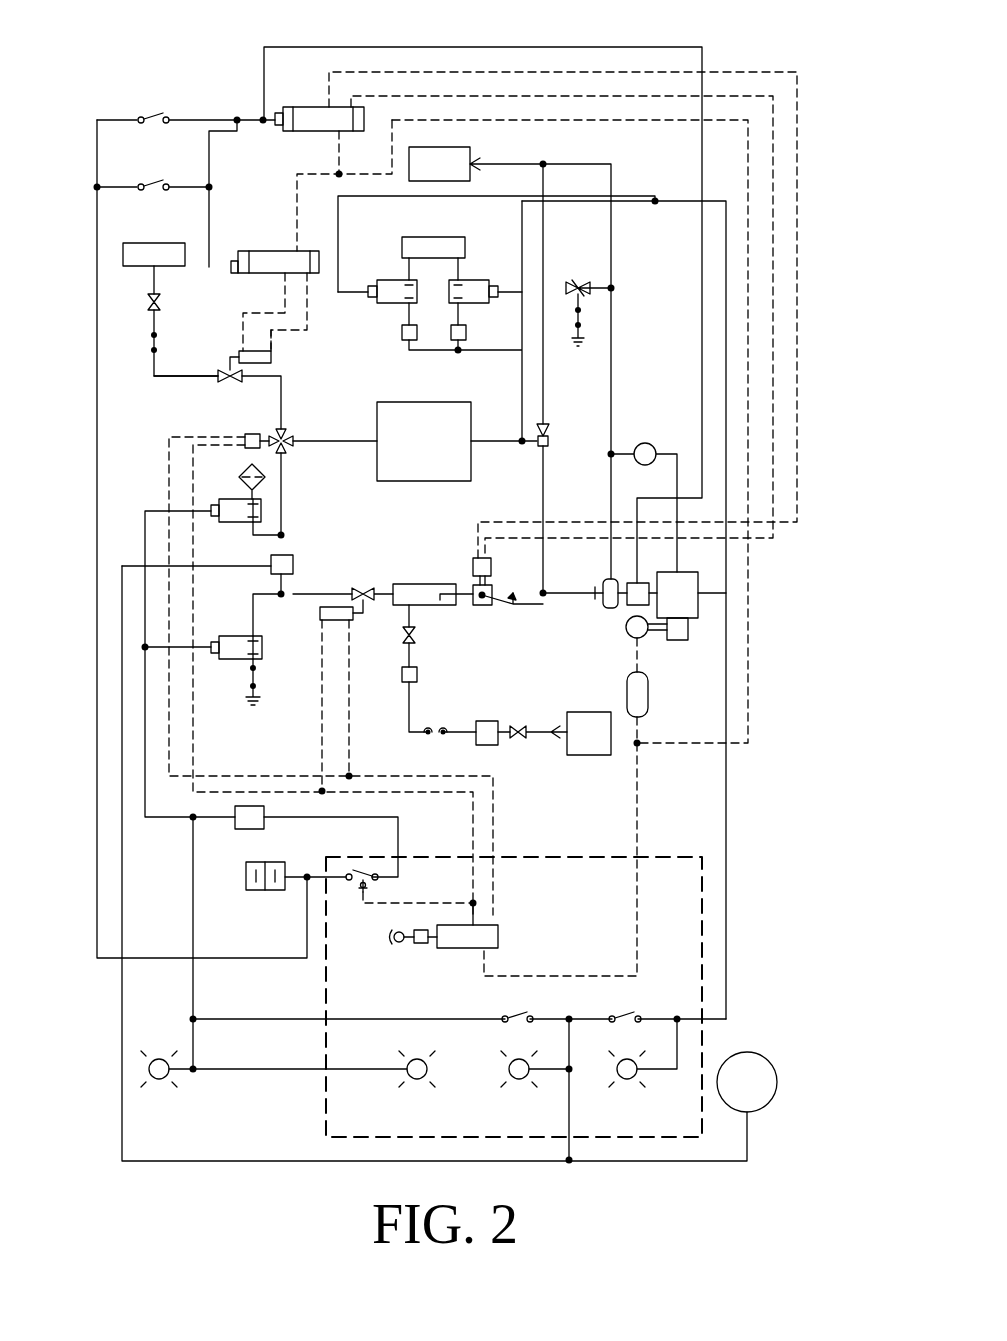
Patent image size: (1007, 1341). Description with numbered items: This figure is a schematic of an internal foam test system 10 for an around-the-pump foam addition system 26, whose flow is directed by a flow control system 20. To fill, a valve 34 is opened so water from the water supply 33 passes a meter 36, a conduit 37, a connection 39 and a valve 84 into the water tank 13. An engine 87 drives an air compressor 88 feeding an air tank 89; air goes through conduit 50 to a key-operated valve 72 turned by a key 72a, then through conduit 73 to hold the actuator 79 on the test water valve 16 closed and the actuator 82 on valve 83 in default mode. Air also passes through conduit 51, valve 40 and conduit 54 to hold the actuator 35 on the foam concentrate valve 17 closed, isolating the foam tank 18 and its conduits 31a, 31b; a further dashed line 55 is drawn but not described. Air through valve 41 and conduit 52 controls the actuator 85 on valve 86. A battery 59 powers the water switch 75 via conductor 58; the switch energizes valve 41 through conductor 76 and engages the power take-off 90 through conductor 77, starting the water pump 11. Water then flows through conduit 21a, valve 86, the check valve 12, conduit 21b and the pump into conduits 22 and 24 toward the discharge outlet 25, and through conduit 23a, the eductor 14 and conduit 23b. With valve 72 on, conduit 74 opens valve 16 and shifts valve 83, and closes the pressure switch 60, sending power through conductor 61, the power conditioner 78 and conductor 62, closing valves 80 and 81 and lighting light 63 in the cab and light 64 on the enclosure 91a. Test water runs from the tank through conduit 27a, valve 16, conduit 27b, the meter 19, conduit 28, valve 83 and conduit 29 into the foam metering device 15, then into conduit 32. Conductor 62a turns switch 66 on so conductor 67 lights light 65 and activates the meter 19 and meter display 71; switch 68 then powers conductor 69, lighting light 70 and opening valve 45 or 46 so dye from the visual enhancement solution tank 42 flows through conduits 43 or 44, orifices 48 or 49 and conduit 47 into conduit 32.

The internal foam test system 10 is at (300, 633).
The water pump 11 is at (608, 608).
The check valve 12 is at (505, 590).
The water tank 13 is at (412, 584).
The eductor 14 is at (548, 441).
The foam metering device 15 is at (430, 402).
The test water valve 16 is at (368, 600).
The foam concentrate valve 17 is at (225, 370).
The foam tank 18 is at (158, 243).
The meter 19 is at (293, 560).
The flow control system 20 is at (205, 435).
The conduit 21a is at (412, 605).
The conduit 21b is at (562, 593).
The conduit 22 is at (611, 385).
The conduit 23a is at (543, 375).
The conduit 23b is at (543, 490).
The conduit 24 is at (513, 164).
The discharge outlet 25 is at (458, 147).
The foam addition system 26 is at (632, 283).
The conduit 27a is at (338, 594).
The conduit 27b is at (310, 612).
The conduit 28 is at (281, 500).
The conduit 29 is at (295, 450).
The conduit 31a is at (190, 376).
The conduit 31b is at (281, 405).
The conduit 32 is at (495, 441).
The water supply 33 is at (585, 712).
The valve 34 is at (518, 738).
The actuator 35 is at (271, 360).
The meter 36 is at (490, 721).
The conduit 37 is at (455, 732).
The connection 39 is at (417, 675).
The valve 40 is at (268, 251).
The valve 41 is at (305, 107).
The visual enhancement solution tank 42 is at (435, 237).
The conduit 43 is at (403, 280).
The conduit 44 is at (465, 280).
The valve 45 is at (372, 297).
The valve 46 is at (493, 297).
The conduit 47 is at (522, 385).
The orifice 48 is at (402, 333).
The orifice 49 is at (466, 333).
The conduit 50 is at (637, 840).
The conduit 51 is at (553, 120).
The conduit 52 is at (597, 95).
The conduit 54 is at (295, 325).
The control line 55 is at (285, 298).
The conductor 58 is at (97, 345).
The battery 59 is at (260, 890).
The pressure switch 60 is at (368, 870).
The conductor 61 is at (398, 840).
The conductor 62 is at (148, 505).
The conductor 62a is at (193, 890).
The light 63 is at (165, 1080).
The light 64 is at (410, 1080).
The light 65 is at (522, 1080).
The switch 66 is at (515, 1015).
The conductor 67 is at (170, 1161).
The switch 68 is at (622, 1015).
The conductor 69 is at (773, 460).
The light 70 is at (630, 1080).
The meter display 71 is at (775, 1065).
The valve 72 is at (498, 937).
The key 72a is at (400, 942).
The conduit 73 is at (493, 840).
The conduit 74 is at (480, 912).
The water switch 75 is at (148, 110).
The conductor 76 is at (205, 120).
The conductor 77 is at (305, 47).
The power conditioner 78 is at (252, 829).
The actuator 79 is at (340, 620).
The valve 80 is at (235, 659).
The valve 81 is at (238, 522).
The actuator 82 is at (252, 434).
The valve 83 is at (293, 438).
The valve 84 is at (415, 640).
The actuator 85 is at (473, 562).
The valve 86 is at (488, 605).
The engine 87 is at (698, 593).
The air compressor 88 is at (626, 633).
The air tank 89 is at (648, 695).
The power take-off 90 is at (638, 583).
The enclosure 91a is at (702, 885).